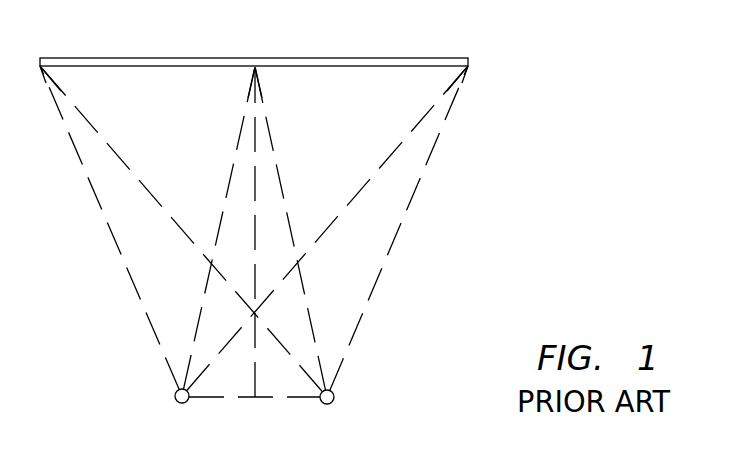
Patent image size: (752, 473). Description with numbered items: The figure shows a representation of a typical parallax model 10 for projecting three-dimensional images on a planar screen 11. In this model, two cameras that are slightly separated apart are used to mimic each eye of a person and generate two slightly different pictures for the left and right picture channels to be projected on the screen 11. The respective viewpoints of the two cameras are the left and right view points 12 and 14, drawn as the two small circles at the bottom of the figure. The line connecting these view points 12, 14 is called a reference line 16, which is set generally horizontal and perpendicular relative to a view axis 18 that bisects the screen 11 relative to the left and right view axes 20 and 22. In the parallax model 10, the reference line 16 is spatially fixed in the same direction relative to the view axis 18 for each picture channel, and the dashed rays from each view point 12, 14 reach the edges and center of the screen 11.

The parallax model 10 is at (571, 128).
The planar screen 11 is at (147, 58).
The left view point 12 is at (175, 394).
The right view point 14 is at (334, 394).
The reference line 16 is at (268, 398).
The view axis 18 is at (257, 227).
The left view axis 20 is at (200, 317).
The right view axis 22 is at (312, 320).